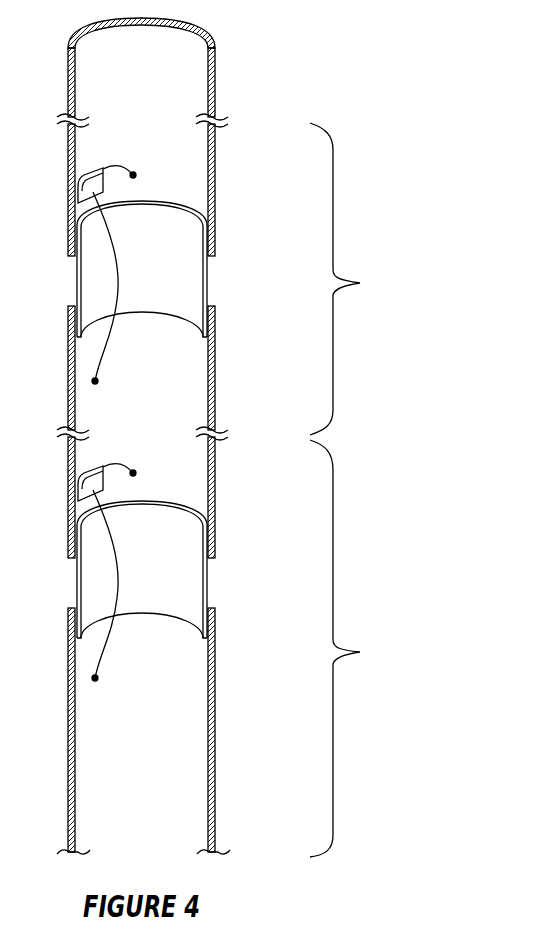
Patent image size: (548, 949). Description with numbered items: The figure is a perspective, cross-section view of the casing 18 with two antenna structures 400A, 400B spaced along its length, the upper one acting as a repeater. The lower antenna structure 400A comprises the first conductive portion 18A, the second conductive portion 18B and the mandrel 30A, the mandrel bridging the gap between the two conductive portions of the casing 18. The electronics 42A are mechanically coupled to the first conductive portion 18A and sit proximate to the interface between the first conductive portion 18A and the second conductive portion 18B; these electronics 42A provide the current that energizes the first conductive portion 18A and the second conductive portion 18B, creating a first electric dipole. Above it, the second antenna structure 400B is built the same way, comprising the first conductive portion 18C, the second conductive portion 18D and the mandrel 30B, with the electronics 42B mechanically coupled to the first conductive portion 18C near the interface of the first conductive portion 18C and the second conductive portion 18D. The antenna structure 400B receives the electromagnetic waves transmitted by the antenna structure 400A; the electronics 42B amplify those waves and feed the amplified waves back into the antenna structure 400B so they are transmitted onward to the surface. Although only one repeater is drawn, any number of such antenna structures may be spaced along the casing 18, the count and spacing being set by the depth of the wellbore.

The casing 18 is at (215, 101).
The first conductive portion 18C is at (215, 190).
The second conductive portion 18D is at (215, 392).
The first conductive portion 18A is at (215, 497).
The second conductive portion 18B is at (215, 763).
The mandrel 30B is at (207, 282).
The mandrel 30A is at (207, 585).
The electronics 42B is at (93, 170).
The electronics 42A is at (93, 468).
The antenna structure 400B is at (366, 279).
The antenna structure 400A is at (365, 648).